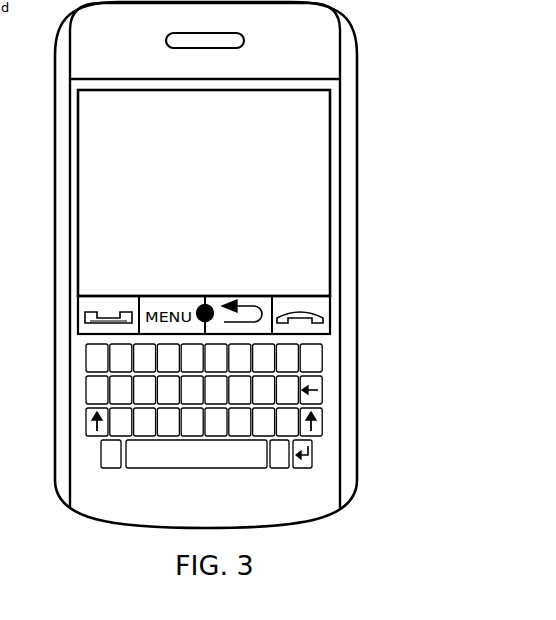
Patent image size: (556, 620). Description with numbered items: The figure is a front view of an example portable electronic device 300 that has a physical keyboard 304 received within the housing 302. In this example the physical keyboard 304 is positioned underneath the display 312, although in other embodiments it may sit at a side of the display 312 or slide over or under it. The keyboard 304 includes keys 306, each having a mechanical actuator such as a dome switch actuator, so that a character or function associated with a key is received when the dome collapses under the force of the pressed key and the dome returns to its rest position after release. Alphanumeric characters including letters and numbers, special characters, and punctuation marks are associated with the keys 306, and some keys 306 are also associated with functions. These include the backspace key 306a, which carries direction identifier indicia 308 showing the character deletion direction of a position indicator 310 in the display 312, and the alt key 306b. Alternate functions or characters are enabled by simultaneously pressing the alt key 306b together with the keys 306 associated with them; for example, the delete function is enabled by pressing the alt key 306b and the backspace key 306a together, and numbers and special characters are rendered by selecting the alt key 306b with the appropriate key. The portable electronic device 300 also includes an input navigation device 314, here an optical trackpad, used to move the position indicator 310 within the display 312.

The portable electronic device 300 is at (362, 538).
The housing 302 is at (348, 152).
The physical keyboard 304 is at (207, 422).
The keys 306 is at (320, 362).
The backspace key 306a is at (355, 391).
The alt key 306b is at (111, 469).
The direction identifier indicia 308 is at (318, 393).
The position indicator 310 is at (100, 180).
The display 312 is at (95, 160).
The input navigation device 314 is at (209, 309).